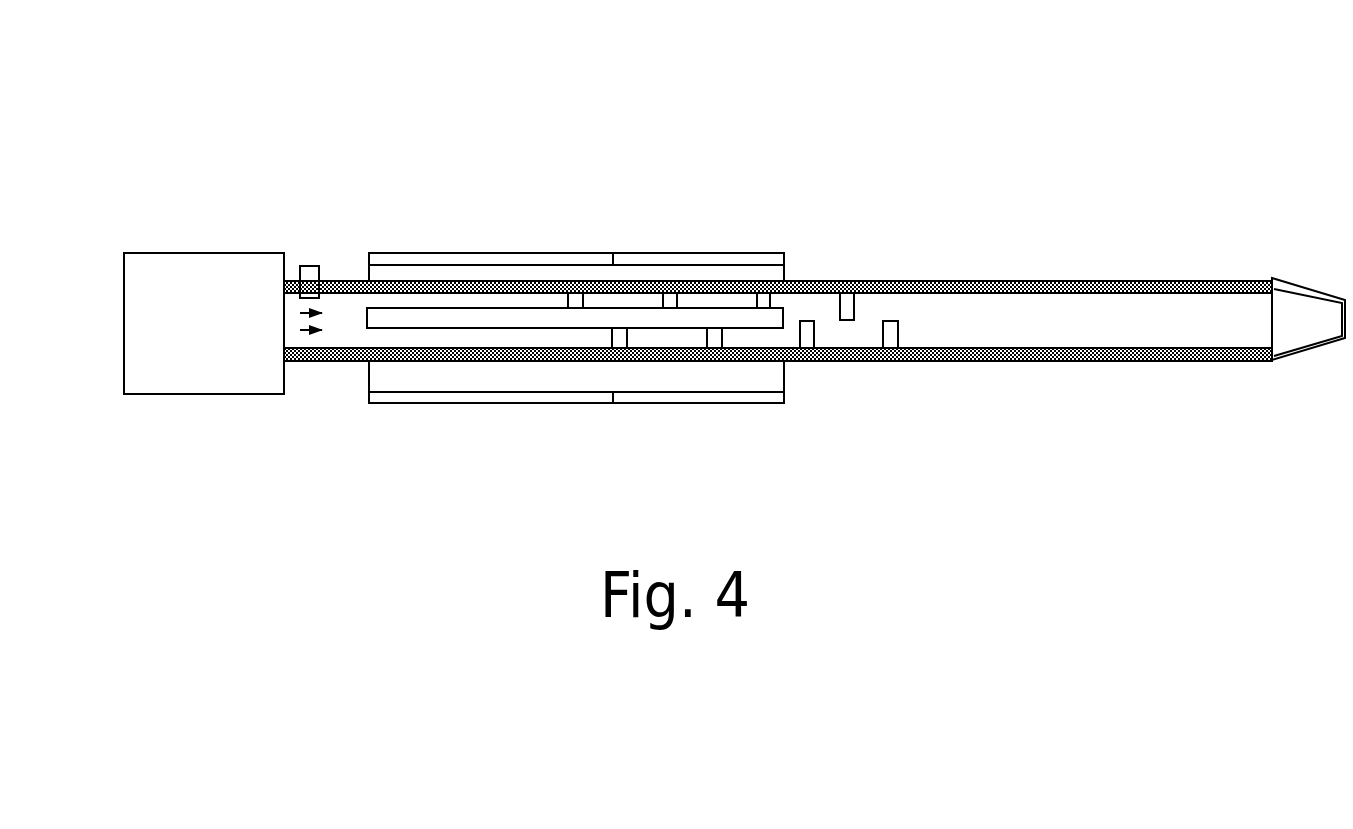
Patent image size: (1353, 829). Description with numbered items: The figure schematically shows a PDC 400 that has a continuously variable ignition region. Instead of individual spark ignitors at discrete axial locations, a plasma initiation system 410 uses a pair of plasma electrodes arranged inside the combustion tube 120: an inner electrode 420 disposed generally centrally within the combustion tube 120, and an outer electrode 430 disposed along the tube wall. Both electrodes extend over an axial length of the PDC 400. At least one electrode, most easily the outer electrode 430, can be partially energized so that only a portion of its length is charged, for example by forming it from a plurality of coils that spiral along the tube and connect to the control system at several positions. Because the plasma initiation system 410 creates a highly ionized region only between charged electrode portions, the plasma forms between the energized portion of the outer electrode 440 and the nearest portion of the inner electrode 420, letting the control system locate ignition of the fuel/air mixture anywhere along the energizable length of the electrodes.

The PDC 400 is at (440, 117).
The plasma initiation system 410 is at (369, 225).
The inner electrode 420 is at (759, 319).
The outer electrode 430 is at (665, 403).
The energized portion of the outer electrode 440 is at (617, 421).
The combustion tube 120 is at (1012, 362).